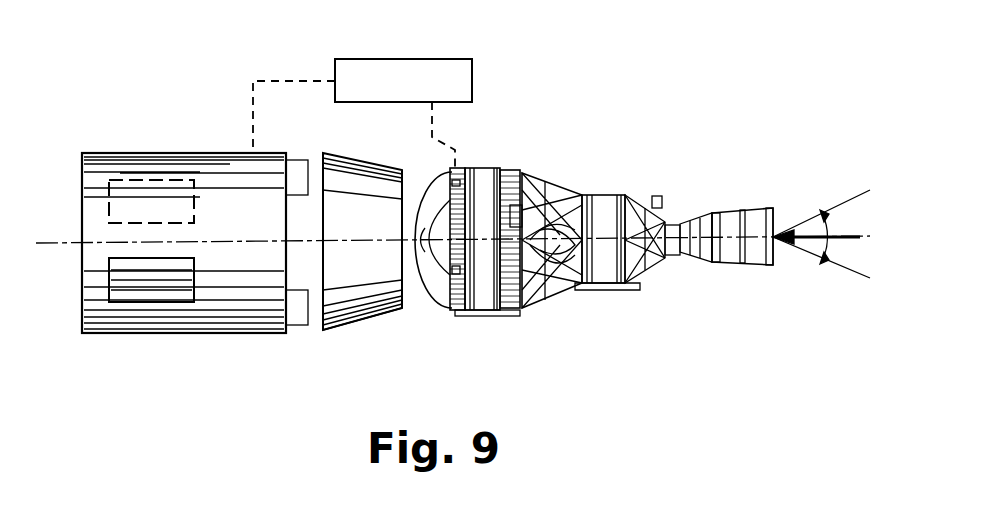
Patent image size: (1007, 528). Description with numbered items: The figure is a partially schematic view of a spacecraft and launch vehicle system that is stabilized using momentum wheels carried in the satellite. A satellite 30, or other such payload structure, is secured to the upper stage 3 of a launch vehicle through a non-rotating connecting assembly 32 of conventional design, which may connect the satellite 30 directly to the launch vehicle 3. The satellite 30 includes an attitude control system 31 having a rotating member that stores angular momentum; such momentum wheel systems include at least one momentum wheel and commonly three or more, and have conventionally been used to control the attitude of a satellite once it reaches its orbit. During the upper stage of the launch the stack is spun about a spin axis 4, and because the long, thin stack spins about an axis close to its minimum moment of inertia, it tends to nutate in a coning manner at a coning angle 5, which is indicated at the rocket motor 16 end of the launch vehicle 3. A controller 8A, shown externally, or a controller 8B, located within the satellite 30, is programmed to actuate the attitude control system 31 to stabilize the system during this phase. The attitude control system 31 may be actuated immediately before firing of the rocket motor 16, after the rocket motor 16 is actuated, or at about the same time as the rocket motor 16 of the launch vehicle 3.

The upper stage 3 is at (500, 322).
The spin axis 4 is at (50, 243).
The coning angle 5 is at (828, 228).
The controller 8A is at (482, 82).
The controller 8B is at (143, 180).
The rocket motor 16 is at (567, 214).
The satellite 30 is at (165, 340).
The attitude control system 31 is at (133, 310).
The connecting assembly 32 is at (347, 335).